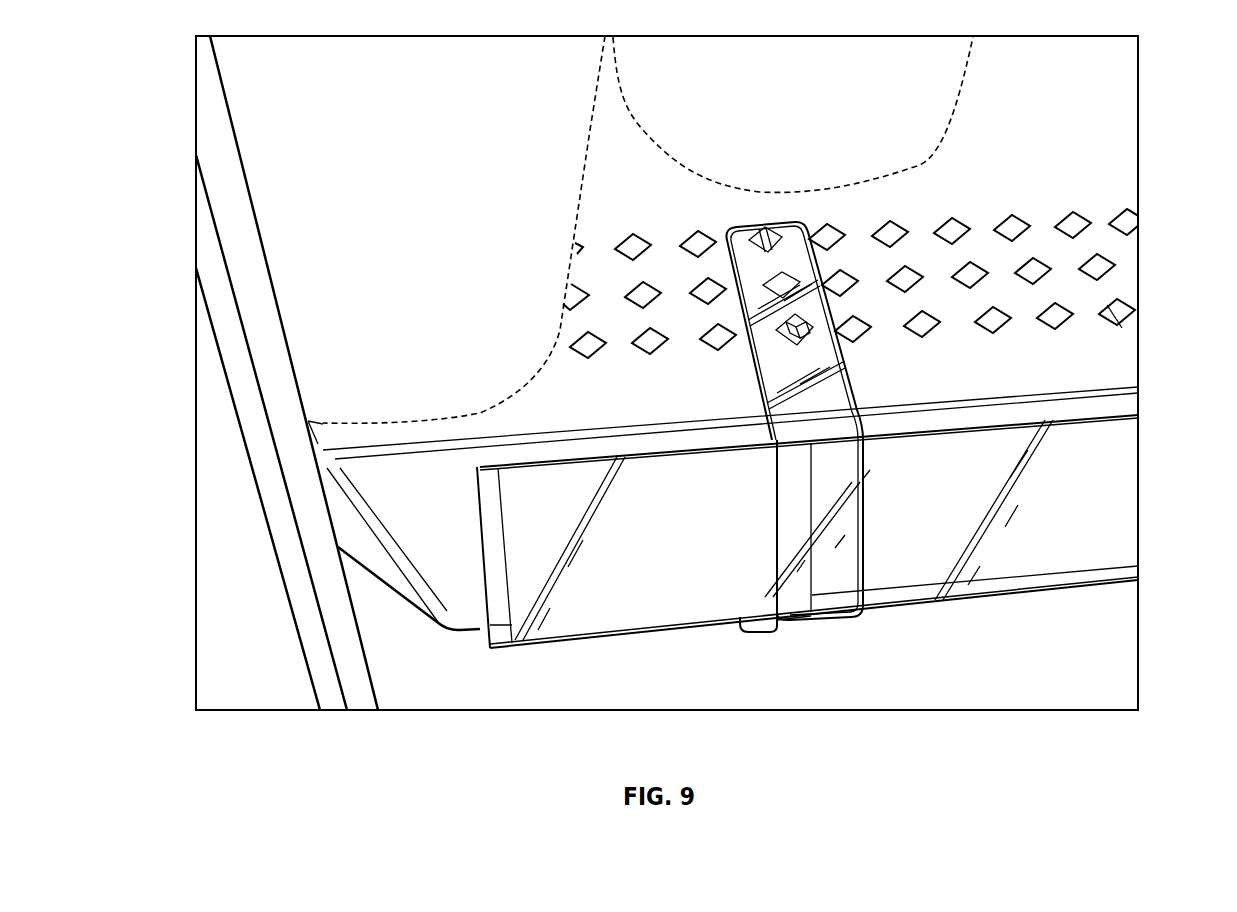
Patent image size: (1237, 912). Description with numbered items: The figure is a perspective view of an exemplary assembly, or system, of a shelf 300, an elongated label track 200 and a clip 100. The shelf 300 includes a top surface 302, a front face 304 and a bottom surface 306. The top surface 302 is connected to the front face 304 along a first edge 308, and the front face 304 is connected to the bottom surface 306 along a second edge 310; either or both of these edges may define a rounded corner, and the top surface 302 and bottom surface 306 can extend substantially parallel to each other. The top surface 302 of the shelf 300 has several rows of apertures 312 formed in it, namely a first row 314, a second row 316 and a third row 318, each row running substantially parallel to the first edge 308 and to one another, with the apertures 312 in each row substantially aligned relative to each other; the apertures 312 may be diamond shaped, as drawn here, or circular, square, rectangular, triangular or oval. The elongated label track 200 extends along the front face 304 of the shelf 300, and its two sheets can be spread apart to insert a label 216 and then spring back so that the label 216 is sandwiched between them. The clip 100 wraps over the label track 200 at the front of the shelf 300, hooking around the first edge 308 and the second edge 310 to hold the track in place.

The clip 100 is at (795, 432).
The elongated label track 200 is at (768, 517).
The label 216 is at (641, 628).
The shelf 300 is at (1106, 165).
The top surface 302 is at (1133, 188).
The front face 304 is at (417, 543).
The bottom surface 306 is at (1117, 587).
The first edge 308 is at (1128, 403).
The second edge 310 is at (1132, 580).
The apertures 312 is at (1107, 305).
The first row 314 is at (1155, 313).
The second row 316 is at (1128, 263).
The third row 318 is at (1152, 221).